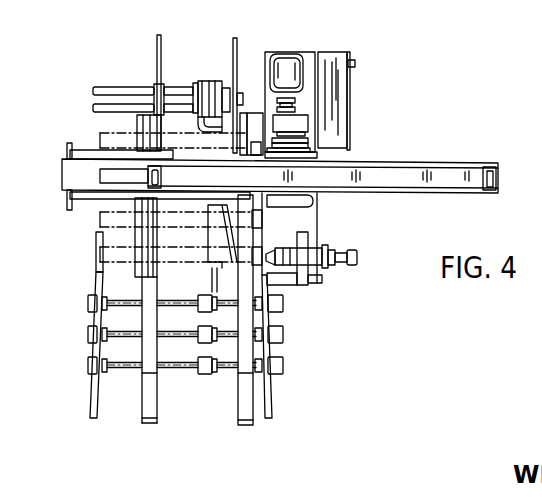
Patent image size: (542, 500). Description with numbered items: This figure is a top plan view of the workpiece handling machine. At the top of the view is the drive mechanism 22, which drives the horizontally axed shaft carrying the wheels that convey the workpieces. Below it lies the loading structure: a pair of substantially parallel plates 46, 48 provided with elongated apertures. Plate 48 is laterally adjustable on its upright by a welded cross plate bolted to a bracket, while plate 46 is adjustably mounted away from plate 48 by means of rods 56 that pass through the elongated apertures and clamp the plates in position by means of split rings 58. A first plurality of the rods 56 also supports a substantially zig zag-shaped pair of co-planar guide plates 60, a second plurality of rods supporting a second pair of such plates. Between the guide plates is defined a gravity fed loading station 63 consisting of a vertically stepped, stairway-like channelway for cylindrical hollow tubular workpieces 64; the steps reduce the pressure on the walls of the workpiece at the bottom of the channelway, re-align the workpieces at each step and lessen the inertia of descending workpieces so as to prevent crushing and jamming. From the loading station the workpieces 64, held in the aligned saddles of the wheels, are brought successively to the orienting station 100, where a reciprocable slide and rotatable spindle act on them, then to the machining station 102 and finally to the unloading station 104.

The drive mechanism 22 is at (261, 65).
The plate 46 is at (96, 352).
The plate 48 is at (267, 350).
The rods 56 is at (119, 332).
The split rings 58 is at (88, 333).
The guide plates 60 is at (147, 423).
The gravity fed loading station 63 is at (195, 387).
The hollow tubular workpieces 64 is at (100, 221).
The orienting station 100 is at (306, 289).
The machining station 102 is at (90, 143).
The unloading station 104 is at (184, 80).